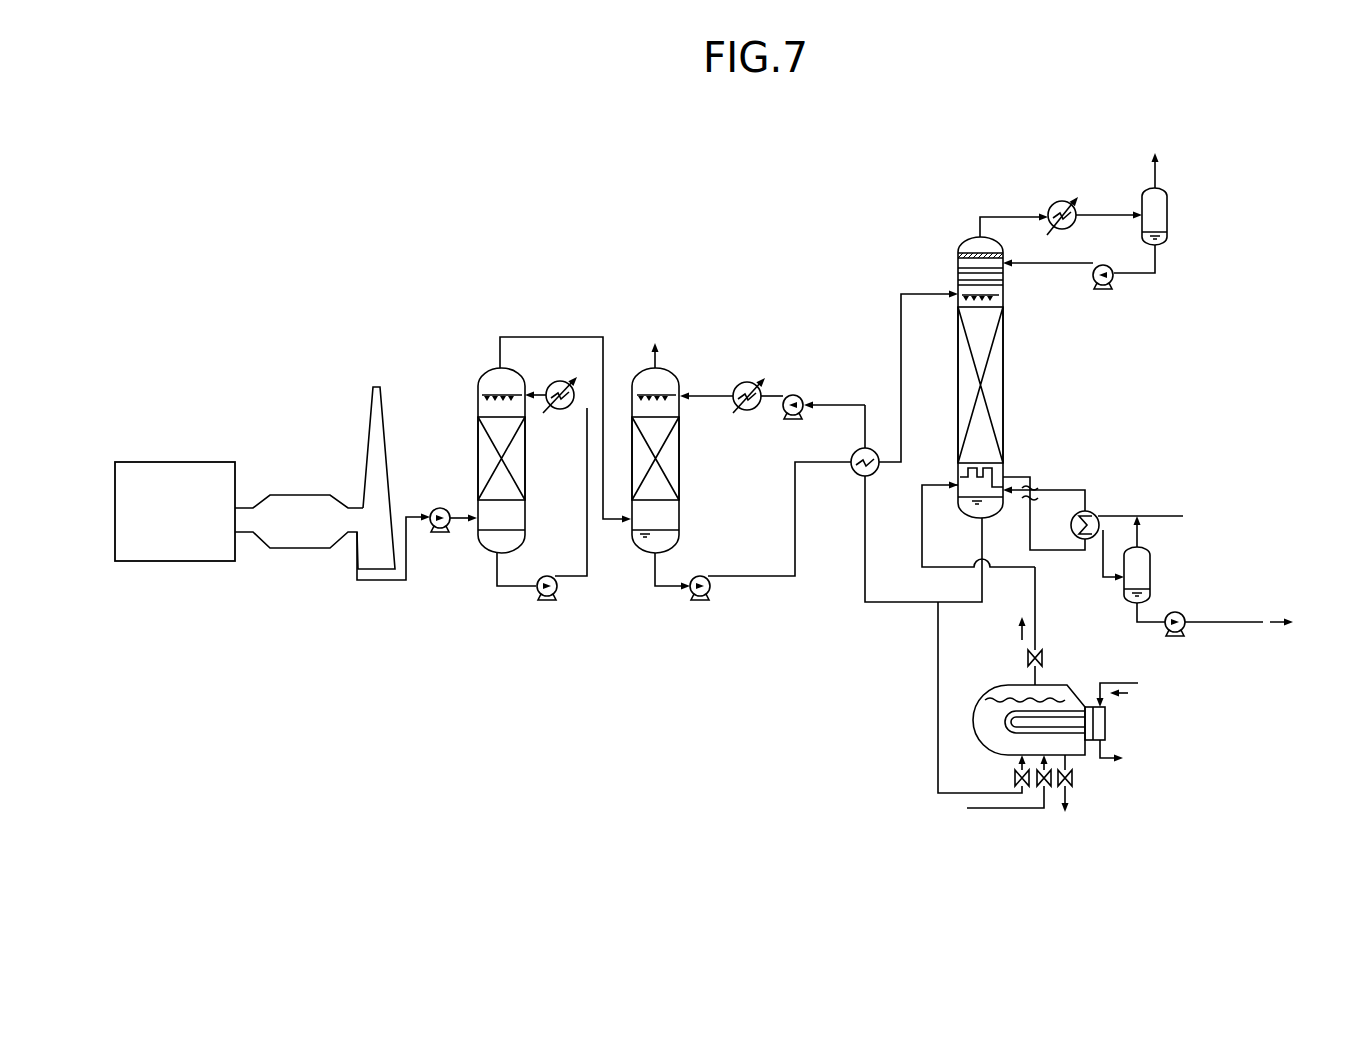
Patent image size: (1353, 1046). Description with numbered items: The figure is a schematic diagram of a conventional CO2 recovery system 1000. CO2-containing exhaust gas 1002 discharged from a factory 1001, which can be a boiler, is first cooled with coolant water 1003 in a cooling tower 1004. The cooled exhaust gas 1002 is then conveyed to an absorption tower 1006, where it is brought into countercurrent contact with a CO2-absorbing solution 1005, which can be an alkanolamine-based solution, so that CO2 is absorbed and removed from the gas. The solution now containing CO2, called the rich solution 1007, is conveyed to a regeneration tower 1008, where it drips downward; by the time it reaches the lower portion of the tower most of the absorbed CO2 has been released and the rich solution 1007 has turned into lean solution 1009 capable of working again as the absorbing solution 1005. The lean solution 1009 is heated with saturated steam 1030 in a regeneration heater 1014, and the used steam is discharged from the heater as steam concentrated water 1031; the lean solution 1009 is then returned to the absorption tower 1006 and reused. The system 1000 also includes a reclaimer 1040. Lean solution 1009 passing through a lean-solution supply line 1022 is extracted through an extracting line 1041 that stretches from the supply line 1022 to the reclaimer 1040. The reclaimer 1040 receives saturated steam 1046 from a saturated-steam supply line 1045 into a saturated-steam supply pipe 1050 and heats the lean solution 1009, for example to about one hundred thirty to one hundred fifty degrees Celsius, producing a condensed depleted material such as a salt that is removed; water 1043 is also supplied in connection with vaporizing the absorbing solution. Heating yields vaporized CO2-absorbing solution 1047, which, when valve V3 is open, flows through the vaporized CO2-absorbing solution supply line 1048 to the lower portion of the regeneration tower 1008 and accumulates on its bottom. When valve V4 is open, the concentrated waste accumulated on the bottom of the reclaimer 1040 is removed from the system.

The CO2 recovery system 1000 is at (567, 173).
The factory 1001 is at (183, 462).
The CO2-containing exhaust gas 1002 is at (515, 337).
The coolant water 1003 is at (537, 397).
The cooling tower 1004 is at (478, 378).
The CO2-absorbing solution 1005 is at (748, 382).
The absorption tower 1006 is at (667, 370).
The rich solution 1007 is at (931, 284).
The regeneration tower 1008 is at (976, 236).
The lean solution 1009 is at (857, 562).
The regeneration heater 1014 is at (1093, 511).
The lean-solution supply line 1022 is at (902, 600).
The saturated steam 1030 is at (1168, 525).
The steam concentrated water 1031 is at (1222, 583).
The reclaimer 1040 is at (992, 690).
The extracting line 1041 is at (938, 765).
The water 1043 is at (996, 818).
The saturated-steam supply line 1045 is at (1140, 672).
The saturated steam 1046 is at (1127, 695).
The vaporized CO2-absorbing solution 1047 is at (1020, 632).
The vaporized CO2-absorbing solution supply line 1048 is at (1035, 613).
The saturated-steam supply pipe 1050 is at (1012, 721).
The valve V3 is at (1042, 660).
The valve V4 is at (1073, 785).